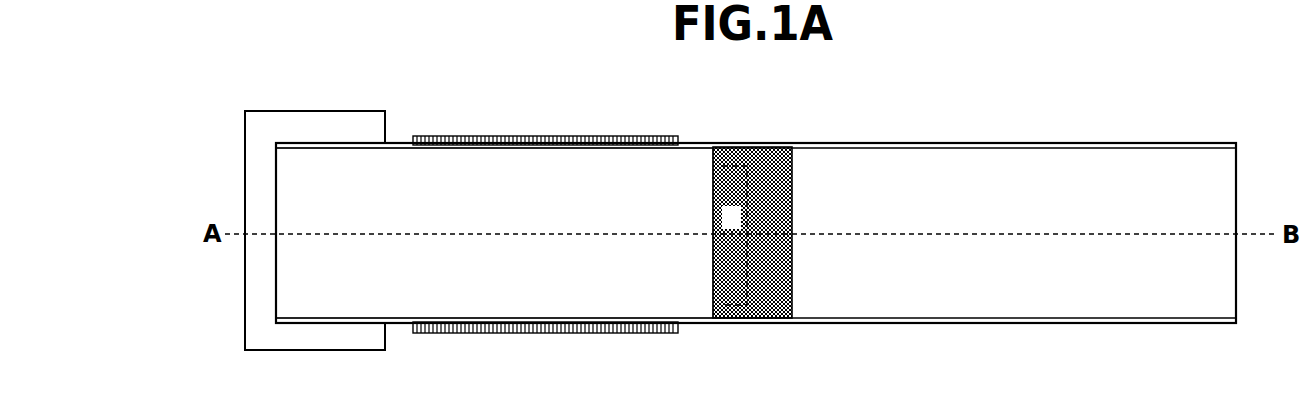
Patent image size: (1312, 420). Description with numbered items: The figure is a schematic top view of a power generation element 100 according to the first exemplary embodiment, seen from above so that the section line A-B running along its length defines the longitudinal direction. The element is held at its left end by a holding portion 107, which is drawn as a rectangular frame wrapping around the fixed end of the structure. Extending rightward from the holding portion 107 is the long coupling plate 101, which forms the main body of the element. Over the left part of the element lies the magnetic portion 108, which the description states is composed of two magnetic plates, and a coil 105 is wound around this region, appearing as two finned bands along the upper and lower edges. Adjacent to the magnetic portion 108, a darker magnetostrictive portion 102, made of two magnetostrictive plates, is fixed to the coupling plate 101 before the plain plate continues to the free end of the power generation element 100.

The power generation element 100 is at (1168, 103).
The coupling plate 101 is at (1006, 152).
The magnetostrictive portion 102 is at (770, 150).
The coil 105 is at (476, 136).
The holding portion 107 is at (313, 117).
The magnetic portion 108 is at (577, 160).